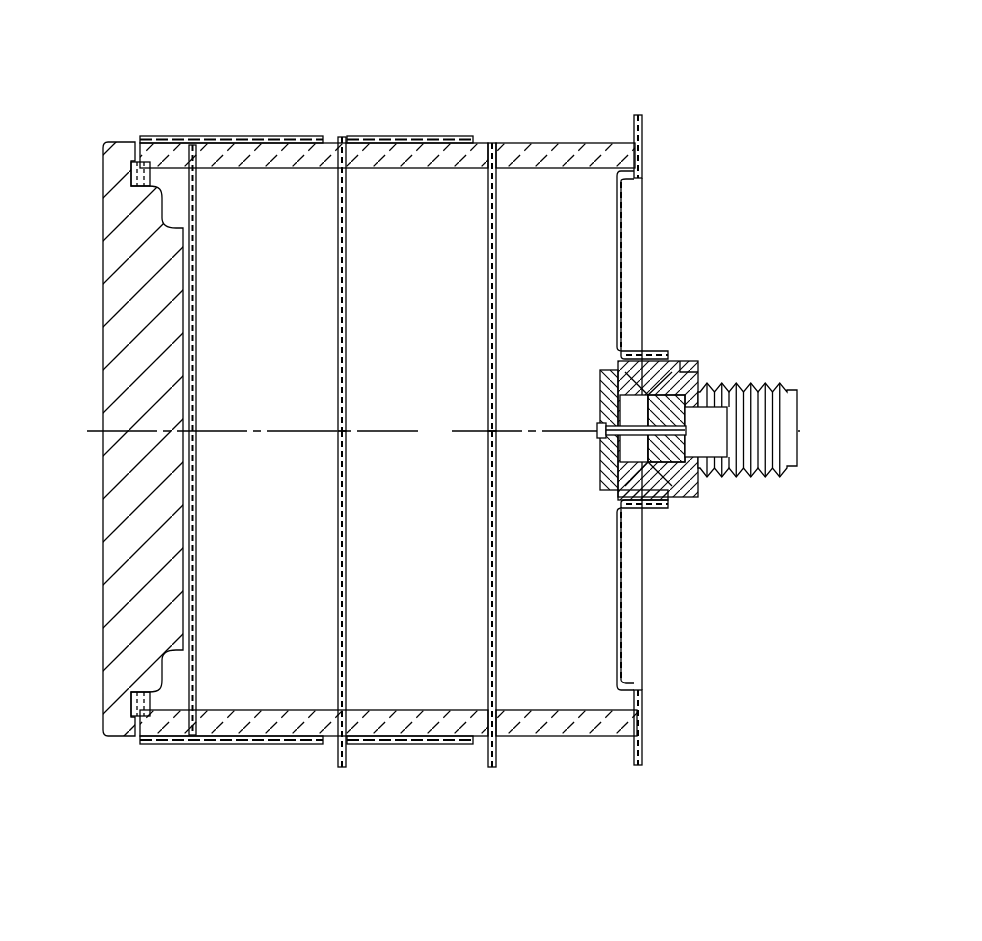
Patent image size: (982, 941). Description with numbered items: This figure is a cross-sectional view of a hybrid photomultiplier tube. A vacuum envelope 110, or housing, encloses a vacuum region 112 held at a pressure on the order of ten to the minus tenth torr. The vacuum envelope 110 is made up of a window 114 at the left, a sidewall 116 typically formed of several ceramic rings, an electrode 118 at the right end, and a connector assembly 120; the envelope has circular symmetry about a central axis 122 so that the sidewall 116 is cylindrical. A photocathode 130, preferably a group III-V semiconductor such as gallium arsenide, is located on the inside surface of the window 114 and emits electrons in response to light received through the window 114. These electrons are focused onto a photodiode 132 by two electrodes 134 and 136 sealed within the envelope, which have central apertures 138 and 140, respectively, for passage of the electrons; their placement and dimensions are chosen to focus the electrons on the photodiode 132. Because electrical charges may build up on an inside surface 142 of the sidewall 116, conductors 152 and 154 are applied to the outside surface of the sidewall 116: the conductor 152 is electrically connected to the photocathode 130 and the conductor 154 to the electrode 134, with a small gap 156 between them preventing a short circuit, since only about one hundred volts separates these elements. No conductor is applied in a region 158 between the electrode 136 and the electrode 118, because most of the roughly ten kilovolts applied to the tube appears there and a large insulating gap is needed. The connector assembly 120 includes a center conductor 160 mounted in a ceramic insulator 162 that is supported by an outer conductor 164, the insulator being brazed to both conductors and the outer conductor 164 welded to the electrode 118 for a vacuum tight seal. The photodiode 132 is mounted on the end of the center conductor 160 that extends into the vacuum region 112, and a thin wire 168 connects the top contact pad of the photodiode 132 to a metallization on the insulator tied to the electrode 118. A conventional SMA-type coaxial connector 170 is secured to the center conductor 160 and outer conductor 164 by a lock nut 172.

The vacuum envelope 110 is at (376, 71).
The vacuum region 112 is at (428, 379).
The window 114 is at (101, 399).
The sidewall 116 is at (540, 143).
The electrode 118 is at (625, 208).
The connector assembly 120 is at (766, 353).
The central axis 122 is at (436, 434).
The photocathode 130 is at (193, 540).
The photodiode 132 is at (614, 418).
The electrode 134 is at (346, 652).
The electrode 136 is at (497, 655).
The central aperture 138 is at (338, 340).
The central aperture 140 is at (497, 345).
The inside surface 142 is at (292, 710).
The conductor 152 is at (270, 136).
The conductor 154 is at (423, 136).
The gap 156 is at (330, 136).
The region 158 is at (547, 737).
The center conductor 160 is at (610, 388).
The ceramic insulator 162 is at (606, 470).
The outer conductor 164 is at (631, 498).
The thin wire 168 is at (597, 433).
The SMA-type coaxial connector 170 is at (801, 450).
The lock nut 172 is at (702, 491).